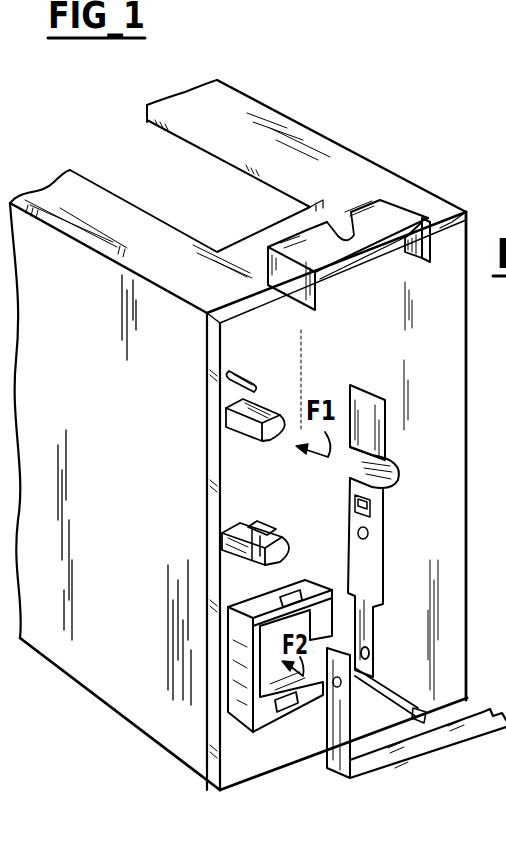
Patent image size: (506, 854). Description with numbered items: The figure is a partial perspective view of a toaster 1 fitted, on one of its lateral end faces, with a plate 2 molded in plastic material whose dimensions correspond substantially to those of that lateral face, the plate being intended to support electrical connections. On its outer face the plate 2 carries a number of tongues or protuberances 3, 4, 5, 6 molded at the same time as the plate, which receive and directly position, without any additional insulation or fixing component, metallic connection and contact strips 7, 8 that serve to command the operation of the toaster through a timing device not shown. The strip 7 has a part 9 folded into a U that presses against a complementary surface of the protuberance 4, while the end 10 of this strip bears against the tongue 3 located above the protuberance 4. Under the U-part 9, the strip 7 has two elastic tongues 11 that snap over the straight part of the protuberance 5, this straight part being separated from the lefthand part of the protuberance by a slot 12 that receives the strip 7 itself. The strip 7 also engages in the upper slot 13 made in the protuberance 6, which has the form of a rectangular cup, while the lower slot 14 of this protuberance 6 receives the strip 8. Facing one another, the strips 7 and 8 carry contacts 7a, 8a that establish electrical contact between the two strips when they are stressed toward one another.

The toaster 1 is at (98, 640).
The plate 2 is at (446, 383).
The tongue 3 is at (250, 372).
The protuberance 4 is at (263, 413).
The protuberance 5 is at (264, 528).
The protuberance 6 is at (305, 596).
The connection and contact strip 7 is at (370, 574).
The contact 7a is at (370, 654).
The connection and contact strip 8 is at (345, 750).
The contact 8a is at (346, 690).
The U-folded part 9 is at (398, 461).
The end of strip 10 is at (365, 398).
The elastic tongues 11 is at (354, 510).
The slot 12 is at (252, 527).
The upper slot 13 is at (278, 595).
The lower slot 14 is at (293, 717).